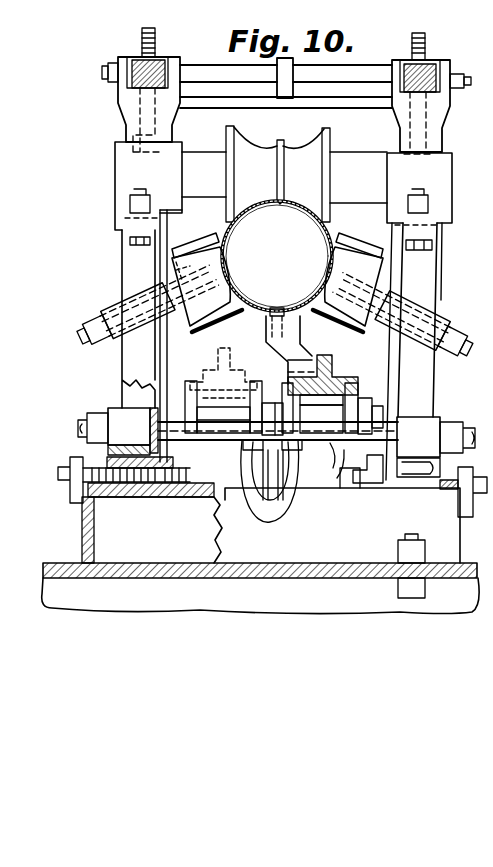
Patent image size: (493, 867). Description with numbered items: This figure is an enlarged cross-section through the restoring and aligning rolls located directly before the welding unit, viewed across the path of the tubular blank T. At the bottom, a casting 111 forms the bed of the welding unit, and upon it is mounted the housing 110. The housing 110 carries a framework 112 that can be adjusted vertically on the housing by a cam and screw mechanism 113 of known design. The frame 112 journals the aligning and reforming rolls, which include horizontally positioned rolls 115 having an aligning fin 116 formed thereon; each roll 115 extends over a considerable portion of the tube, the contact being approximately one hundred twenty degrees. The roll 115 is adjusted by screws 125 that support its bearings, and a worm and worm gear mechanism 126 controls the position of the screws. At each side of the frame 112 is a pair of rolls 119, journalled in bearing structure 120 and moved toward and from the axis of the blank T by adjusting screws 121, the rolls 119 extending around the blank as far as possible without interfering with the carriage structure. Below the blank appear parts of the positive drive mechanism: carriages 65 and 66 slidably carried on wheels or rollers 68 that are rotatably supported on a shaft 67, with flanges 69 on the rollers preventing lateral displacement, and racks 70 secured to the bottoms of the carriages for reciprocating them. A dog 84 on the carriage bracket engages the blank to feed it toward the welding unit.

The screws 125 is at (427, 50).
The worm and worm gear mechanism 126 is at (112, 64).
The aligning fin 116 is at (278, 148).
The horizontally positioned rolls 115 is at (328, 151).
The tubular blank T is at (300, 214).
The rolls 119 is at (320, 259).
The bearing structure 120 is at (198, 246).
The adjusting screws 121 is at (85, 326).
The dog 84 is at (276, 308).
The framework 112 is at (122, 362).
The carriage 65 is at (212, 378).
The carriage 66 is at (342, 385).
The racks 70 is at (321, 455).
The shaft 67 is at (328, 469).
The flanges 69 is at (270, 476).
The wheels or rollers 68 is at (270, 487).
The cam and screw mechanism 113 is at (60, 470).
The housing 110 is at (86, 520).
The casting 111 is at (52, 564).